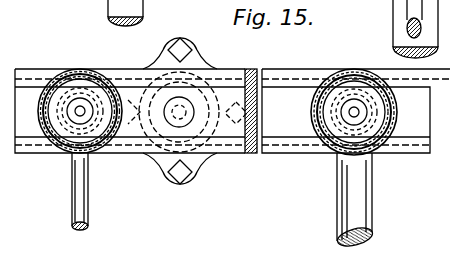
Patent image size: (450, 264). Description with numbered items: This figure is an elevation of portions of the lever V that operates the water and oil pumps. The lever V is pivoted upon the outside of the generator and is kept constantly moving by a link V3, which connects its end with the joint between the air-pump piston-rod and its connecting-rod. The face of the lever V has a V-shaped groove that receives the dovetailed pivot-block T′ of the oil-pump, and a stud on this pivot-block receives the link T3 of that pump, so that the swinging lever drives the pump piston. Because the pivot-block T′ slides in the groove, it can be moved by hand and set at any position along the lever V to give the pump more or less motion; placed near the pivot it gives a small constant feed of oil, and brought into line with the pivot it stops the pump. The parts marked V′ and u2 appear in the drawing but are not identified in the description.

The pivot-block T′ is at (80, 97).
The link T3 is at (94, 191).
The lever V is at (356, 100).
The roller wheel V′ is at (354, 102).
The link V3 is at (367, 201).
The center wheel u2 is at (179, 112).